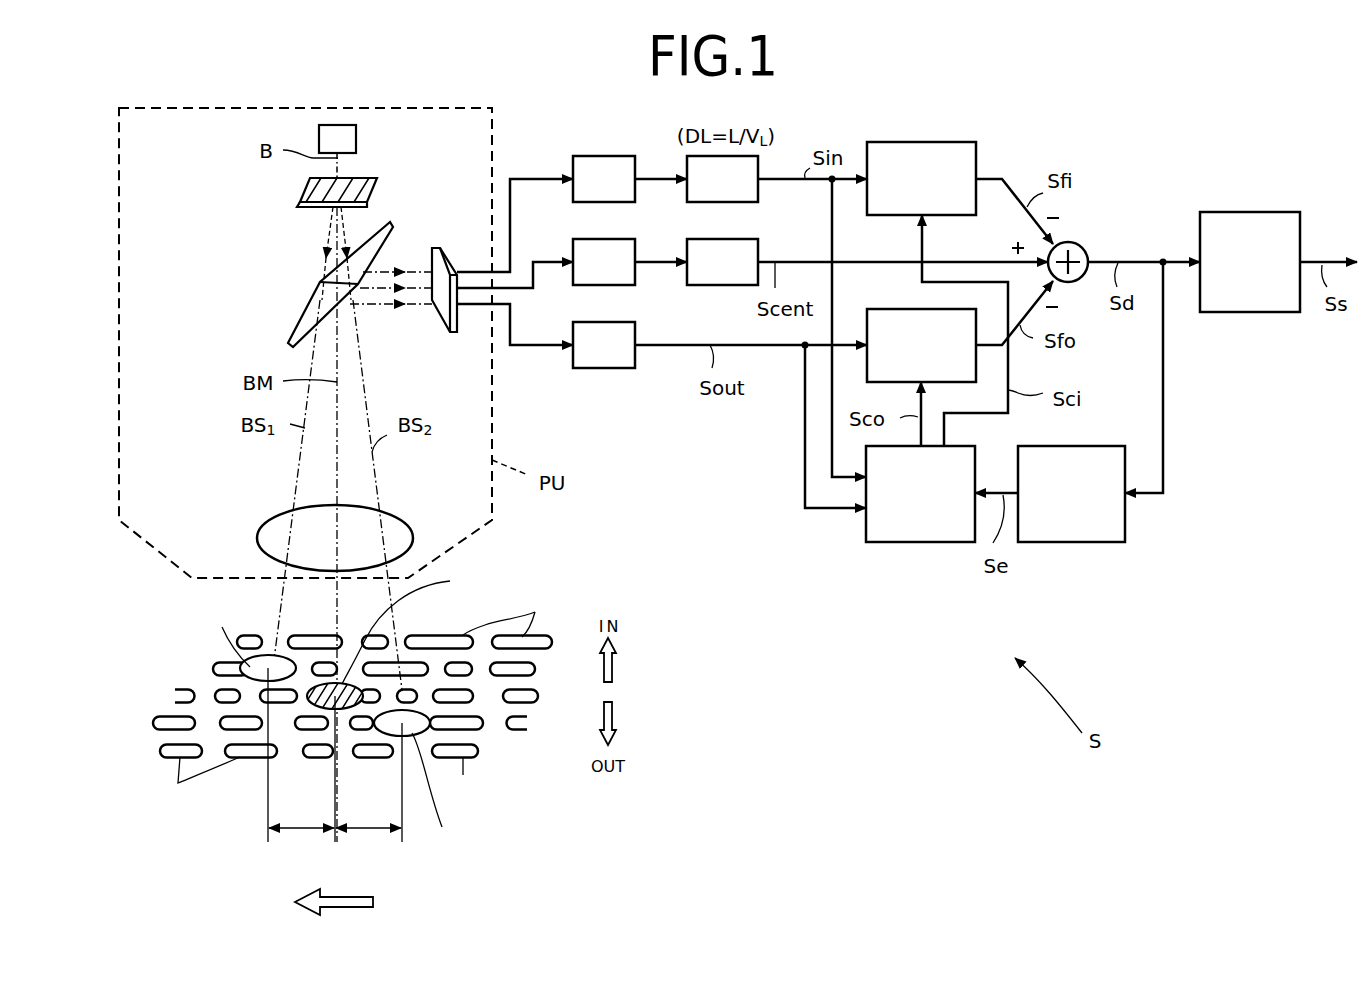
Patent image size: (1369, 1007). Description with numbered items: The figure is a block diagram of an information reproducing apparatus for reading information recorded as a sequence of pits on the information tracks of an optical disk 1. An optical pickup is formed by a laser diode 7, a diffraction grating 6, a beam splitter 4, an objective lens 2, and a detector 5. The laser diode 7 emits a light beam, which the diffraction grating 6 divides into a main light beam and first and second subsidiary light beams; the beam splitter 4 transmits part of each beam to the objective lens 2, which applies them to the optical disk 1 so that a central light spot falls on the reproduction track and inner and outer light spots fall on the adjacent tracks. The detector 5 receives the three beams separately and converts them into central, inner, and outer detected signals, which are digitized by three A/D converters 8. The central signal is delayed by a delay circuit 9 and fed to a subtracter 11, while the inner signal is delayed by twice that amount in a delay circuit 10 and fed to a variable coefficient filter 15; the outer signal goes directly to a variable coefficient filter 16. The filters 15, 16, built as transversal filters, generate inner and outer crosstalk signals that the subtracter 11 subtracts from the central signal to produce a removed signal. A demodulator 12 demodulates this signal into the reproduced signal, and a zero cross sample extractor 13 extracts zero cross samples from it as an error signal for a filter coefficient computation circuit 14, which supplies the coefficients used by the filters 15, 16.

The optical disk 1 is at (488, 768).
The objective lens 2 is at (278, 515).
The beam splitter 4 is at (312, 291).
The detector 5 is at (445, 333).
The diffraction grating 6 is at (308, 188).
The laser diode 7 is at (350, 125).
The A/D converters 8 is at (572, 160).
The delay circuit 9 is at (700, 285).
The delay circuit 10 is at (760, 197).
The subtracter 11 is at (1087, 243).
The demodulator 12 is at (1260, 212).
The zero cross sample extractor 13 is at (1085, 542).
The filter coefficient computation circuit 14 is at (923, 542).
The variable coefficient filter 15 is at (952, 142).
The variable coefficient filter 16 is at (893, 309).